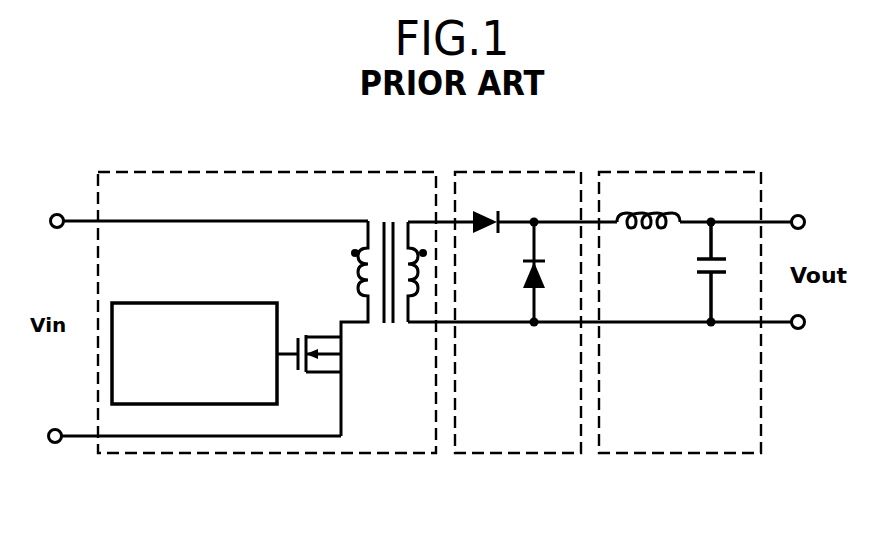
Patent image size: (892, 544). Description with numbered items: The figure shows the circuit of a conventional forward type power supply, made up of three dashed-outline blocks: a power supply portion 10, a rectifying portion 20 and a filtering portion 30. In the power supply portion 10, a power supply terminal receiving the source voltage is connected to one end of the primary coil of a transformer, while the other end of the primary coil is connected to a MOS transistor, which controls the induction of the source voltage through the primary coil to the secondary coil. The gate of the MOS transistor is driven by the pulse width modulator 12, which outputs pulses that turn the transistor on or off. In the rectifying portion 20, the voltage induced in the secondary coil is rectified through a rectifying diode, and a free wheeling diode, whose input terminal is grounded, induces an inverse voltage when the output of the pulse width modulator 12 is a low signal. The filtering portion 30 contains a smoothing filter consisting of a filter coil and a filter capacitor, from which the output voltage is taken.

The power supply portion 10 is at (267, 351).
The pulse width modulator 12 is at (192, 302).
The rectifying portion 20 is at (513, 453).
The filtering portion 30 is at (683, 453).